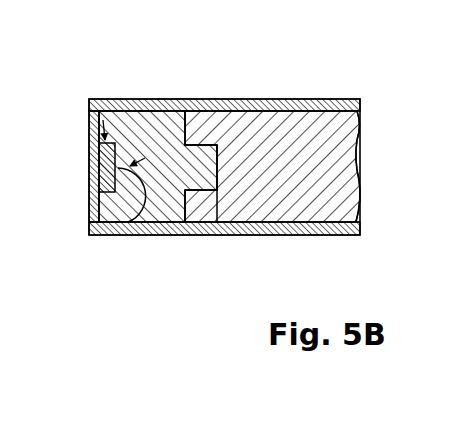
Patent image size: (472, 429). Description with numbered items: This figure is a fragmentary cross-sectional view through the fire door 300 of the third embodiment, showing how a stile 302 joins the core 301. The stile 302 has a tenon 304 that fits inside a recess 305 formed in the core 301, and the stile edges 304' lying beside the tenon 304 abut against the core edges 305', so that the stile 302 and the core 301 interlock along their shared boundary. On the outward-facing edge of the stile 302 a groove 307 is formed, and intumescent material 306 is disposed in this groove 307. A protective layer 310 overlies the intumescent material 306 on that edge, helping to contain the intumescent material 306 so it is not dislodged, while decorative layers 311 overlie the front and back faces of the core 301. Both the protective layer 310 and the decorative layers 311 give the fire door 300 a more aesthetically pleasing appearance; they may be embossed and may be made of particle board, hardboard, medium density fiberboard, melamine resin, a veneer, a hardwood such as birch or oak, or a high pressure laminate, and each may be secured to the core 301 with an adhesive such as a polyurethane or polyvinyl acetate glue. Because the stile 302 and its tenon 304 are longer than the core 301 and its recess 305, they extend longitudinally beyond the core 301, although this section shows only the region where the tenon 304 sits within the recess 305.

The fire door 300 is at (175, 318).
The core 301 is at (322, 99).
The stile 302 is at (98, 99).
The tenon 304 is at (235, 239).
The stile edges 304' is at (167, 164).
The recess 305 is at (224, 132).
The core edges 305' is at (231, 161).
The intumescent material 306 is at (88, 167).
The groove 307 is at (96, 100).
The protective layer 310 is at (88, 147).
The decorative layer 311 is at (190, 99).